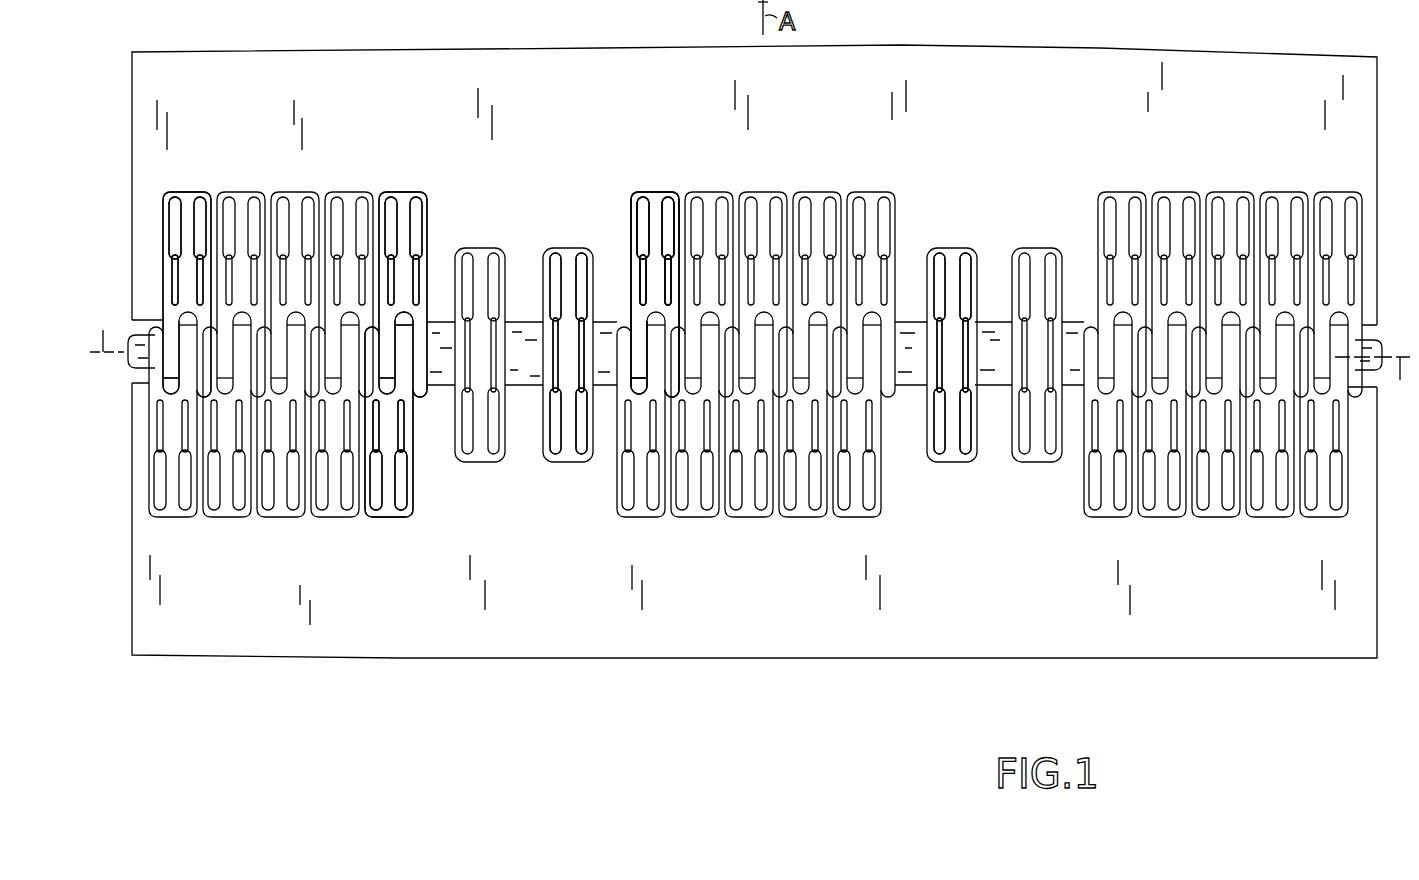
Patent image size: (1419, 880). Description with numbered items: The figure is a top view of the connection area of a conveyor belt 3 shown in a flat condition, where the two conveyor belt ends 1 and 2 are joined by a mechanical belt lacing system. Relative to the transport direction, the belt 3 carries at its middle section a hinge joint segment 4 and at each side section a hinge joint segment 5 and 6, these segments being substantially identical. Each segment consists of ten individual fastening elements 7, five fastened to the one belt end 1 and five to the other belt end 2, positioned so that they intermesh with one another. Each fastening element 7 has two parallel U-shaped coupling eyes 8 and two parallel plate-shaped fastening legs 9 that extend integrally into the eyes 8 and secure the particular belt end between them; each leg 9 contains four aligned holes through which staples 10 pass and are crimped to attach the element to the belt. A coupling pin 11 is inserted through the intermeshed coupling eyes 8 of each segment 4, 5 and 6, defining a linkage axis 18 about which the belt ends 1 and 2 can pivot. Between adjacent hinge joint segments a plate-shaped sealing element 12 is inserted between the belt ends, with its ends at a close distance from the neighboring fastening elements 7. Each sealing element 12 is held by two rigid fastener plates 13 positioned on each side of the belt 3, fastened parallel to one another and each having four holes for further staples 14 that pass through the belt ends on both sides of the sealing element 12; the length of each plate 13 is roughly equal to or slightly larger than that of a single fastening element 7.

The conveyor belt end 1 is at (1374, 137).
The conveyor belt end 2 is at (1372, 508).
The conveyor belt 3 is at (122, 298).
The hinge joint segment 4 is at (755, 353).
The hinge joint segment 5 is at (342, 181).
The hinge joint segment 6 is at (1204, 167).
The fastening element 7 is at (717, 182).
The coupling eye 8 is at (397, 360).
The fastening leg 9 is at (655, 195).
The staple 10 is at (205, 205).
The coupling pin 11 is at (130, 370).
The sealing element 12 is at (528, 373).
The fastener plate 13 is at (566, 250).
The staple 14 is at (578, 290).
The linkage axis 18 is at (753, 355).